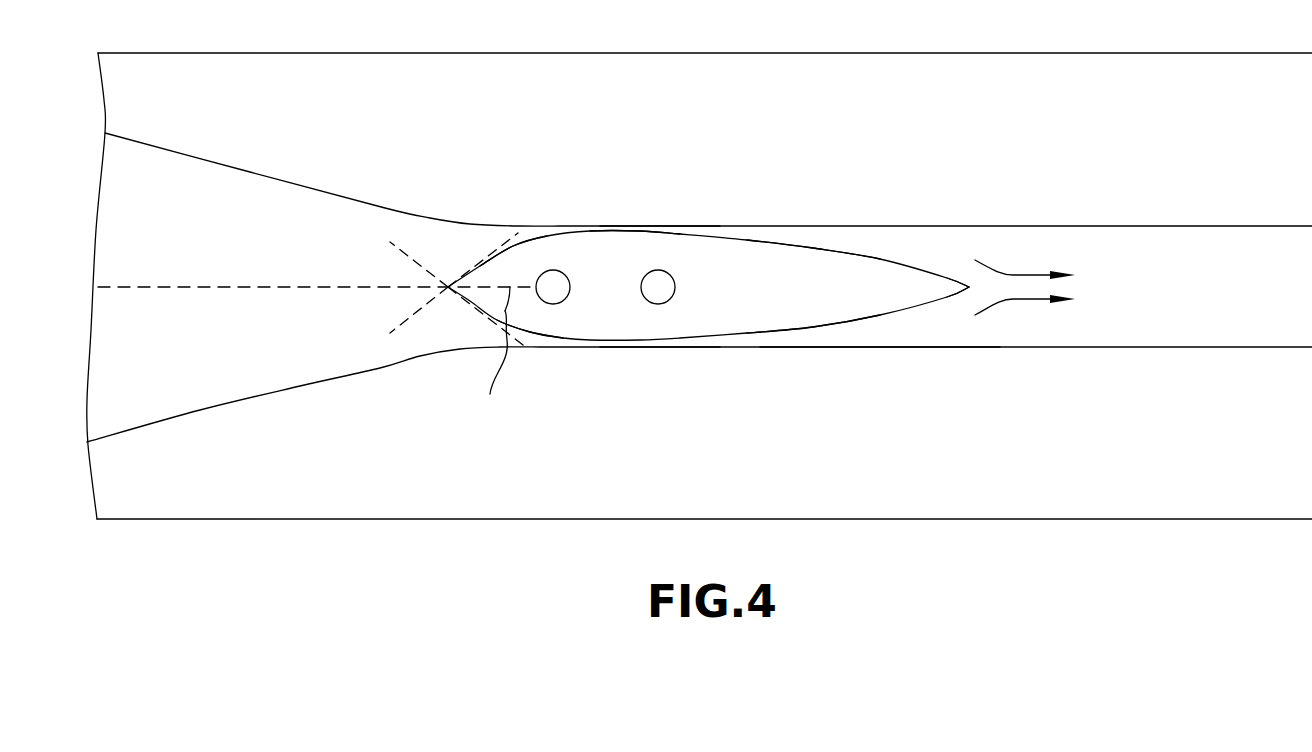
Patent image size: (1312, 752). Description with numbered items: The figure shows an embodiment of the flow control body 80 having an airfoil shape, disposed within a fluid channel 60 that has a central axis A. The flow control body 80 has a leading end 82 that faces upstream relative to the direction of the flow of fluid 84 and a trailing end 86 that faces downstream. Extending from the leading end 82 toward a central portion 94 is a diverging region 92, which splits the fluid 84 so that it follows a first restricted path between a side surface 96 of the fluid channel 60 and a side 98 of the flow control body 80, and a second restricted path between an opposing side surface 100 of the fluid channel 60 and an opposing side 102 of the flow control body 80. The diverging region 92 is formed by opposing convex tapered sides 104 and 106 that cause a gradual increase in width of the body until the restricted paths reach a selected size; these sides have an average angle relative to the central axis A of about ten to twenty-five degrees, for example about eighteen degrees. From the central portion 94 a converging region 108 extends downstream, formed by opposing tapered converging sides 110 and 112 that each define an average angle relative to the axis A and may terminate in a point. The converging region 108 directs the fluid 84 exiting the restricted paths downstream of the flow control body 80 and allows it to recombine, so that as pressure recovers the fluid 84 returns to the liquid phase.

The fluid channel 60 is at (1091, 256).
The central axis A is at (162, 283).
The flow control body 80 is at (768, 270).
The leading end 82 is at (448, 286).
The fluid 84 is at (340, 232).
The trailing end 86 is at (963, 280).
The diverging region 92 is at (528, 385).
The central portion 94 is at (605, 265).
The side surface of the fluid channel 96 is at (654, 227).
The side of the flow control body 98 is at (665, 233).
The side surface of the fluid channel 100 is at (652, 349).
The opposing side of the flow control body 102 is at (643, 341).
The tapered side 104 is at (523, 243).
The tapered side 106 is at (554, 339).
The converging region 108 is at (876, 392).
The tapered converging side 110 is at (807, 333).
The tapered converging side 112 is at (815, 248).